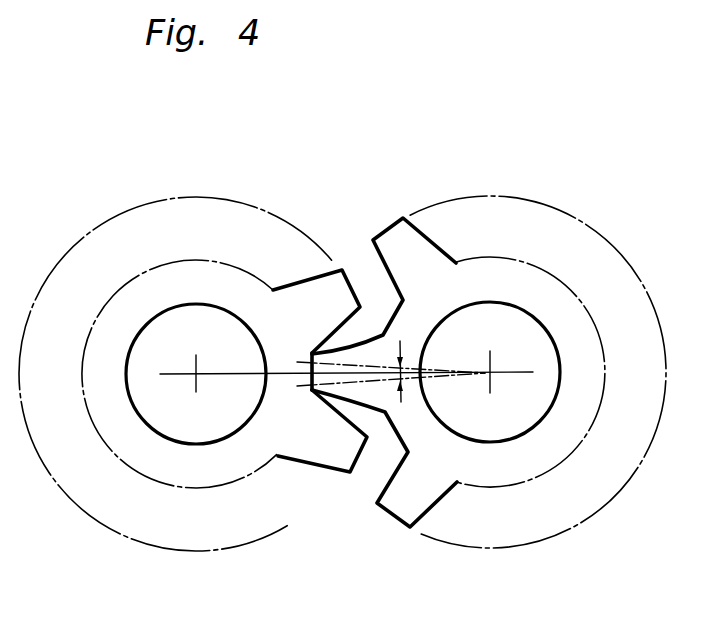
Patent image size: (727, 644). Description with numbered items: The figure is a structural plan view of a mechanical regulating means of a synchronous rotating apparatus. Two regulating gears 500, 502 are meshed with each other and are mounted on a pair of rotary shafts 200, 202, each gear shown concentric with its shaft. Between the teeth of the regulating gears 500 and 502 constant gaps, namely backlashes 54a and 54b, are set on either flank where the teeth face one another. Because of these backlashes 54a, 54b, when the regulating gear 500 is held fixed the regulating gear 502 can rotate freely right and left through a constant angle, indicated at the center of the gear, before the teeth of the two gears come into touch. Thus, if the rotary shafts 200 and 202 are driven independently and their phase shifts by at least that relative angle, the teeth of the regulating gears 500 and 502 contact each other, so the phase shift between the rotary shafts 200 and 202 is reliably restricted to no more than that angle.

The regulating gear 500 is at (233, 293).
The regulating gear 502 is at (437, 295).
The rotary shaft 200 is at (201, 420).
The rotary shaft 202 is at (502, 418).
The backlash 54a is at (335, 408).
The backlash 54b is at (371, 312).